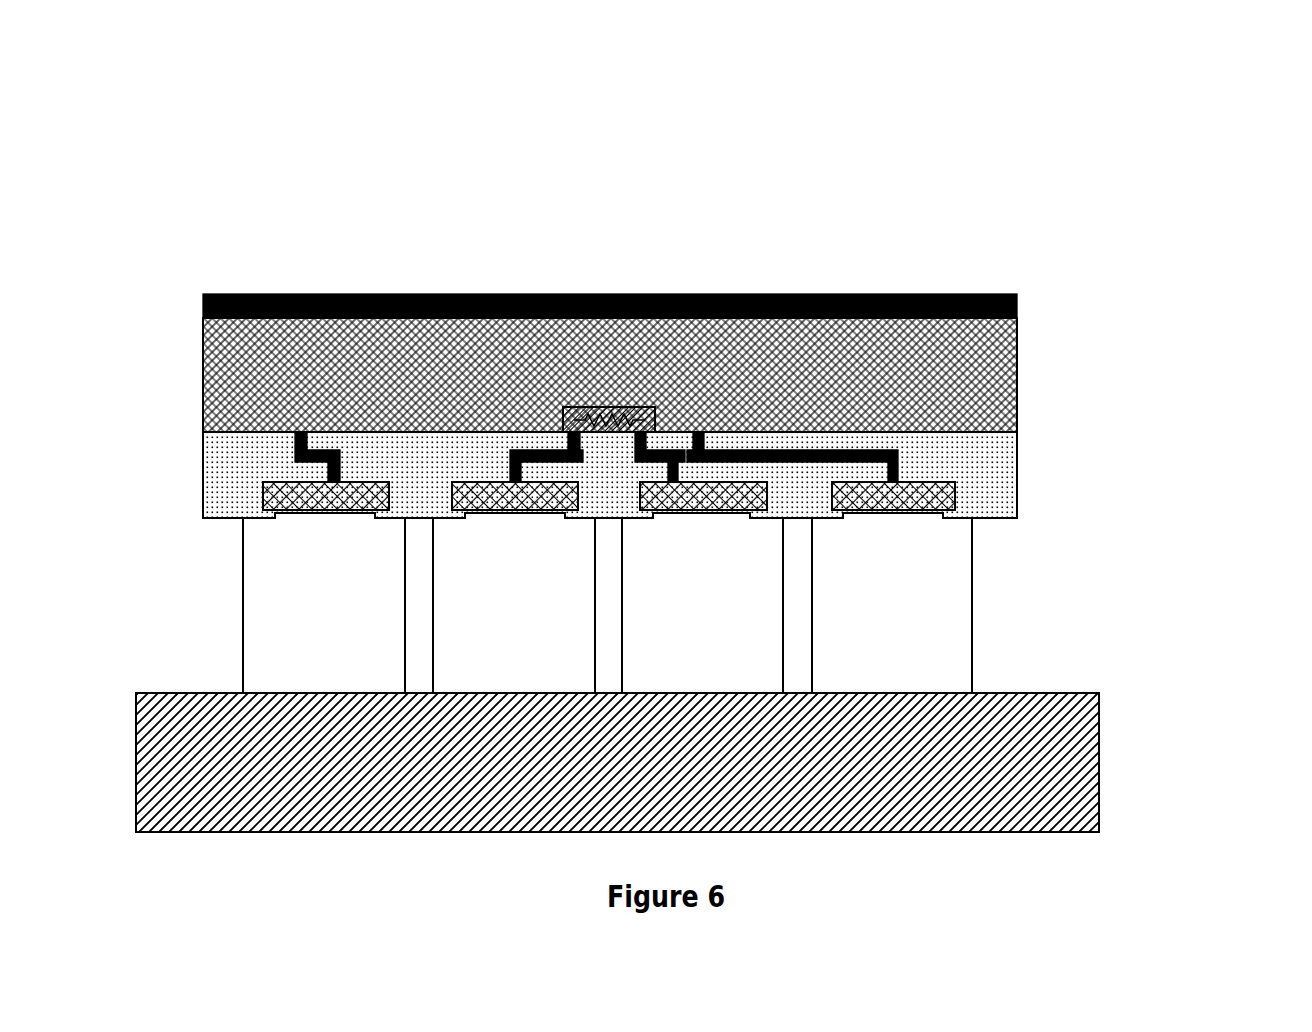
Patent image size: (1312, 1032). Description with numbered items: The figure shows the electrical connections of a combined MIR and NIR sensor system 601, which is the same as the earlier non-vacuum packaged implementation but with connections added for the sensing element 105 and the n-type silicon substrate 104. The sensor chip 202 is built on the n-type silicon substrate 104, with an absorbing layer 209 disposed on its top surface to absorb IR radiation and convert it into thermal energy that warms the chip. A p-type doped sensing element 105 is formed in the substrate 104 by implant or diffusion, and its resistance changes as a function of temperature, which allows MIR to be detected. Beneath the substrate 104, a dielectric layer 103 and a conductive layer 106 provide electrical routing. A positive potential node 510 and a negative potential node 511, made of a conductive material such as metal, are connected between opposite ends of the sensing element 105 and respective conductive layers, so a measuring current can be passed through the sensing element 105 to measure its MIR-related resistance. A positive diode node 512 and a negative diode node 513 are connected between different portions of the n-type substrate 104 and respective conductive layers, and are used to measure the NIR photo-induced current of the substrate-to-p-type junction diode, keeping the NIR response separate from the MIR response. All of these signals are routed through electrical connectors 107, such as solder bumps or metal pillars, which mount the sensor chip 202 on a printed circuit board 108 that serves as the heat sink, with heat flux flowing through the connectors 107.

The sensor system 601 is at (985, 116).
The sensor chip 202 is at (1133, 297).
The absorbing layer 209 is at (701, 292).
The n-type silicon substrate 104 is at (976, 344).
The sensing element 105 is at (610, 406).
The conductive layer 106 is at (376, 477).
The dielectric layer 103 is at (1020, 521).
The positive diode node 512 is at (291, 451).
The positive potential node 510 is at (504, 455).
The negative potential node 511 is at (636, 464).
The negative diode node 513 is at (901, 468).
The electrical connectors 107 is at (974, 608).
The printed circuit board 108 is at (169, 755).